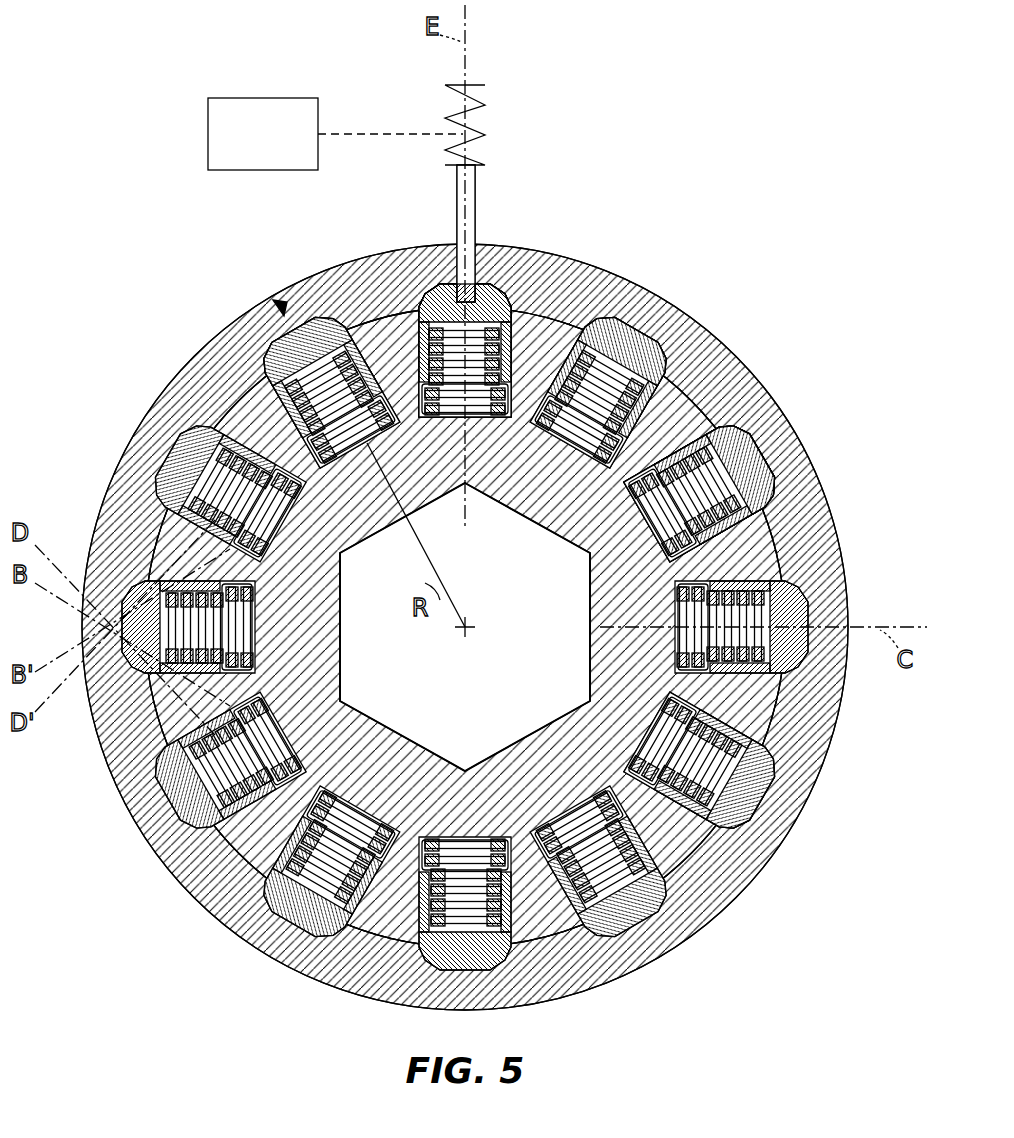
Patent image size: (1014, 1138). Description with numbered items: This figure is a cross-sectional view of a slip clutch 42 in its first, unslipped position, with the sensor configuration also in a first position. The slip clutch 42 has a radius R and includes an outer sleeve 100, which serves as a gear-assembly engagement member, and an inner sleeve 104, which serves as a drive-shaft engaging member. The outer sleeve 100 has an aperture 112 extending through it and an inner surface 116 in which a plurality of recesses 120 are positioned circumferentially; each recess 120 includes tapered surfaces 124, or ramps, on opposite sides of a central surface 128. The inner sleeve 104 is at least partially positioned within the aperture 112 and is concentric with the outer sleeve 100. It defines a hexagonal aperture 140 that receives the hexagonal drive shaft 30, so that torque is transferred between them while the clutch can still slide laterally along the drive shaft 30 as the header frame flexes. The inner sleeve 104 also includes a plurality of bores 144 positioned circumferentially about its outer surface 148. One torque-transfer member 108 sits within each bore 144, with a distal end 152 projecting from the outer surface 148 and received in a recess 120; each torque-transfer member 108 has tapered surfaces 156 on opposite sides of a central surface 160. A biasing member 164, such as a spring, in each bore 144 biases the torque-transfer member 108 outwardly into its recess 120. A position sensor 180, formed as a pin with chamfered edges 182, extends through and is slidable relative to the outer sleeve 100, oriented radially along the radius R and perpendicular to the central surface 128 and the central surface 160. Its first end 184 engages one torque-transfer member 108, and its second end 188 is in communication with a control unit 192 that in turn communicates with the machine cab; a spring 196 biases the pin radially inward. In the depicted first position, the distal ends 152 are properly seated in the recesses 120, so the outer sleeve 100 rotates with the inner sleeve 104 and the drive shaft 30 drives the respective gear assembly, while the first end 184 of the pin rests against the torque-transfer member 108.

The drive shaft 30 is at (488, 672).
The slip clutch 42 is at (150, 228).
The outer sleeve 100 is at (697, 350).
The inner sleeve 104 is at (780, 547).
The torque-transfer member 108 is at (590, 305).
The aperture 112 is at (263, 387).
The inner surface 116 is at (727, 423).
The recess 120 is at (757, 457).
The tapered surface 124 is at (740, 427).
The central surface 128 is at (763, 497).
The aperture 140 is at (285, 302).
The bore 144 is at (700, 700).
The outer surface 148 is at (737, 872).
The distal end 152 is at (780, 603).
The tapered surface 156 is at (440, 298).
The central surface 160 is at (455, 290).
The biasing member 164 is at (693, 675).
The position sensor 180 is at (476, 212).
The chamfered edges 182 is at (485, 300).
The first end 184 is at (510, 418).
The second end 188 is at (476, 183).
The control unit 192 is at (335, 134).
The spring 196 is at (455, 112).